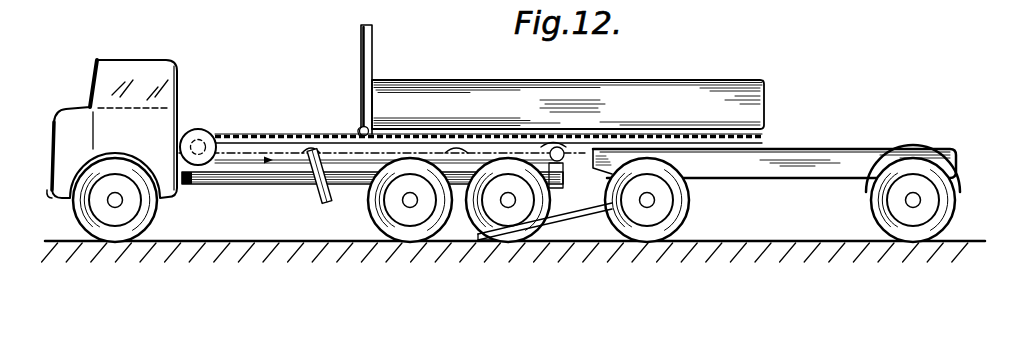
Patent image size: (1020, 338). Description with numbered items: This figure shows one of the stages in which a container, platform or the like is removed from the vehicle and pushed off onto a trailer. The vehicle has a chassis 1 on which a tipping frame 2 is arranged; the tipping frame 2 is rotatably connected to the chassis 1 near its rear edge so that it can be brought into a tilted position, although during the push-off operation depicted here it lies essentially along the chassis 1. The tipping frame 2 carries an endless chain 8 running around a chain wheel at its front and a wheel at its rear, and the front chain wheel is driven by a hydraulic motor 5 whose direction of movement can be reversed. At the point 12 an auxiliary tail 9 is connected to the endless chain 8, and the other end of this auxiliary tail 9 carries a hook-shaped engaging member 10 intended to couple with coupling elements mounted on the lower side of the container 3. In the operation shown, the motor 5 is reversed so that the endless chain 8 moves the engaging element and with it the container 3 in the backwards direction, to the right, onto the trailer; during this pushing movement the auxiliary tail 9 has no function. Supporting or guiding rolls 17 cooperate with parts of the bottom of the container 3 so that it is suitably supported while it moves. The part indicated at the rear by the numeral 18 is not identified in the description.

The chassis 1 is at (238, 173).
The tipping frame 2 is at (272, 158).
The container 3 is at (415, 93).
The hydraulic motor 5 is at (202, 130).
The endless chain 8 is at (300, 158).
The auxiliary tail 9 is at (279, 134).
The hook-shaped engaging member 10 is at (358, 131).
The connection point 12 is at (246, 134).
The supporting rolls 17 is at (564, 157).
The trailer frame 18 is at (764, 142).